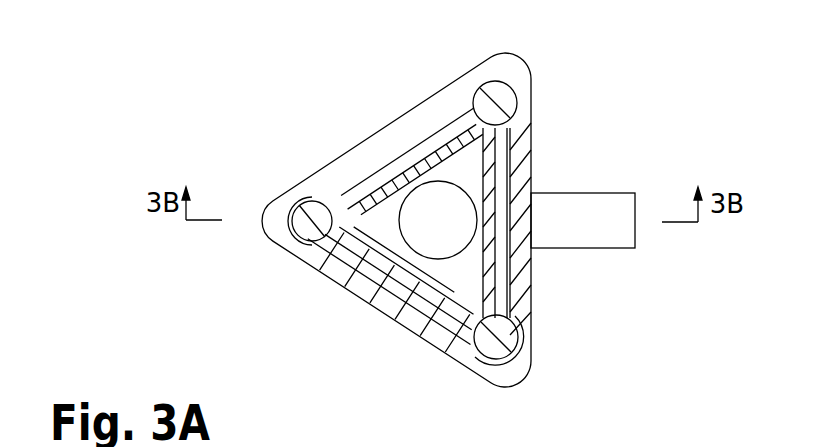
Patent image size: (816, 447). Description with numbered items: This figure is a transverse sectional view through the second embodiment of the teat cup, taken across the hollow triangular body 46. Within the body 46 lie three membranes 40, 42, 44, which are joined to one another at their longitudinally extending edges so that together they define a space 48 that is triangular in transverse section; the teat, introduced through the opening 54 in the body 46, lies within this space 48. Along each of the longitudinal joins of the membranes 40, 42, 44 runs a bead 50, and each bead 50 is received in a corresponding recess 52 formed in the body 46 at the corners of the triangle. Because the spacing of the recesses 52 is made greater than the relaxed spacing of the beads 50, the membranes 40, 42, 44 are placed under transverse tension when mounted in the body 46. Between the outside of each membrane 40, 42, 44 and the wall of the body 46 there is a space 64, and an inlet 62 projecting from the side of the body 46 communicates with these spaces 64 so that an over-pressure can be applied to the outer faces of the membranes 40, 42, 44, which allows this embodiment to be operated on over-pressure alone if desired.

The membrane 40 is at (512, 190).
The membrane 42 is at (403, 175).
The membrane 44 is at (398, 290).
The hollow triangular body 46 is at (525, 340).
The space 48 is at (347, 287).
The bead 50 is at (508, 92).
The recess 52 is at (532, 82).
The opening 54 is at (437, 310).
The inlet 62 is at (601, 192).
The space 64 is at (442, 108).